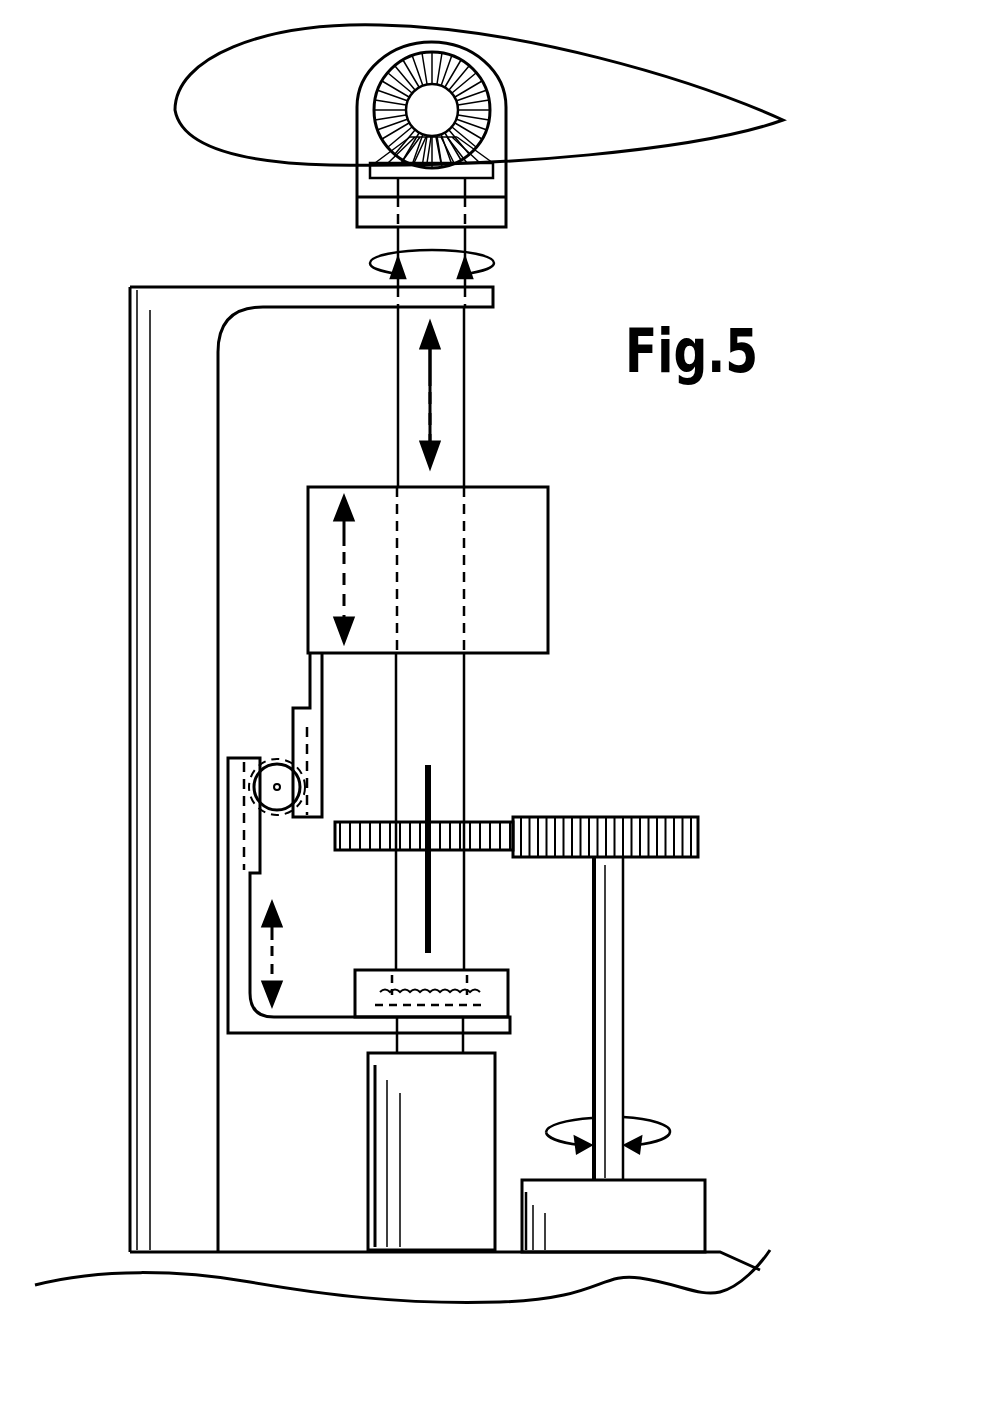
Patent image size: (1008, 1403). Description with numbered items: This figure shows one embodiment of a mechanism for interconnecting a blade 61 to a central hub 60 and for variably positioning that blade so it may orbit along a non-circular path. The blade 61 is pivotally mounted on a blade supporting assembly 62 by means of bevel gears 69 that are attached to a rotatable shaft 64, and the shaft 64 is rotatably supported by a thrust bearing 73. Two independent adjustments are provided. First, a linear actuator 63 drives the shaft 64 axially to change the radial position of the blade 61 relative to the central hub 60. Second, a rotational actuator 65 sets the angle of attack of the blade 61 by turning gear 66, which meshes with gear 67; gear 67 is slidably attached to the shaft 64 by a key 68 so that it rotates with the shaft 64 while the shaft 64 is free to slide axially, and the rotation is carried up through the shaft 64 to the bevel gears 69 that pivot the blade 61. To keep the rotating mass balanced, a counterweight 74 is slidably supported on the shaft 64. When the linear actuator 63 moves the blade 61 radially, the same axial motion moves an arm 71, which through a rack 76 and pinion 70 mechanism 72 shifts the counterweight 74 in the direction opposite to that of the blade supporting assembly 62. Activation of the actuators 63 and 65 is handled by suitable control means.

The central hub 60 is at (723, 1252).
The blade 61 is at (608, 63).
The blade supporting assembly 62 is at (503, 230).
The linear actuator 63 is at (497, 1107).
The shaft 64 is at (396, 698).
The rotational actuator 65 is at (705, 1178).
The gear 66 is at (565, 817).
The gear 67 is at (475, 822).
The key 68 is at (433, 793).
The bevel gears 69 is at (470, 145).
The pinion 70 is at (278, 817).
The arm 71 is at (310, 1035).
The rack and pinion mechanism 72 is at (307, 747).
The thrust bearing 73 is at (505, 968).
The counterweight 74 is at (548, 487).
The rack 76 is at (323, 797).